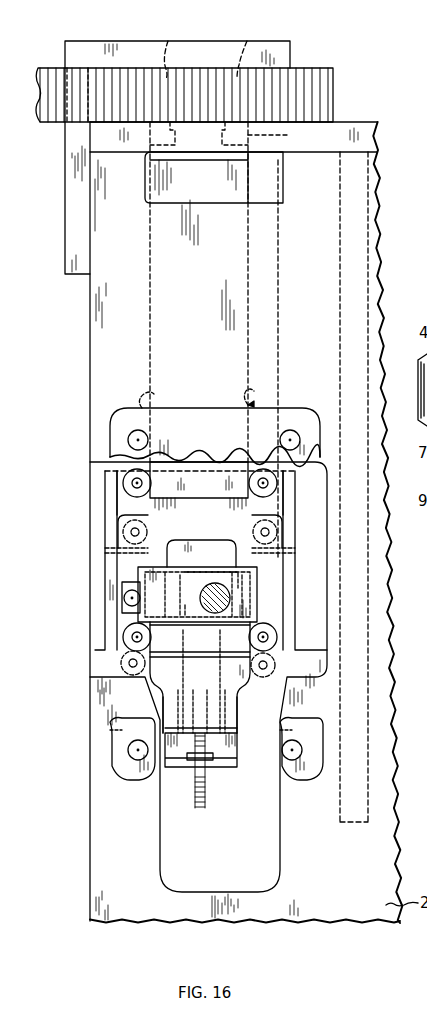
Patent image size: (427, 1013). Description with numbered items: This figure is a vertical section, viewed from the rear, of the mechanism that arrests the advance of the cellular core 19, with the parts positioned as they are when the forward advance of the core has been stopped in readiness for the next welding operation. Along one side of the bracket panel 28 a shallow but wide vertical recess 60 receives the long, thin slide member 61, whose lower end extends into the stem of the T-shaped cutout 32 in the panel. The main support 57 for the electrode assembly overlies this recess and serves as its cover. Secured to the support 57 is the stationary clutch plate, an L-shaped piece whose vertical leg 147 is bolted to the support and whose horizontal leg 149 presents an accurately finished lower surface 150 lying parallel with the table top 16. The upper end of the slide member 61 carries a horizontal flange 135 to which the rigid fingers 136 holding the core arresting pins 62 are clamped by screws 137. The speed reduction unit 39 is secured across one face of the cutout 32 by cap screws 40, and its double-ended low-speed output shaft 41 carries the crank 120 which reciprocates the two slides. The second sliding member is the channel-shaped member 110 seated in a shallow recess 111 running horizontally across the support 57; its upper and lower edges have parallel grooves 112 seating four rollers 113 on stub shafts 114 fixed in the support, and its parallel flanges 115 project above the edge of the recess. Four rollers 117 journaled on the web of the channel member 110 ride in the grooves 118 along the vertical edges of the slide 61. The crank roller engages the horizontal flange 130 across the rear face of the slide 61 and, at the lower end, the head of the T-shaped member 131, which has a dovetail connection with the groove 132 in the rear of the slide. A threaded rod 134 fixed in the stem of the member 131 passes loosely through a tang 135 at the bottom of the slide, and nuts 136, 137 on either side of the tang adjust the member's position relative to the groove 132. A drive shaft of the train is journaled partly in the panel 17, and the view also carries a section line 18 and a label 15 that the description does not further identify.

The core 19 is at (318, 70).
The horizontal leg 149 is at (120, 50).
The core arresting pins 62 is at (206, 49).
The lower surface 150 is at (270, 74).
The table top 16 is at (362, 123).
The vertical leg 147 is at (70, 184).
The vertical recess 60 is at (270, 240).
The nut 136 is at (135, 178).
The slide member 61 is at (258, 186).
The tang 135 is at (194, 158).
The main support 57 is at (379, 238).
The frame member 15 is at (376, 266).
The panel 17 is at (138, 417).
The speed reduction unit 39 is at (290, 432).
The cap screws 40 is at (290, 430).
The parallel grooves 118 is at (242, 406).
The T-shaped cutout 32 is at (97, 466).
The flange 130 is at (202, 503).
The rollers 117 is at (122, 484).
The parallel flanges 115 is at (105, 493).
The rollers 113 is at (118, 530).
The stub shafts 114 is at (110, 540).
The parallel grooves 112 is at (297, 540).
The shallow recess 111 is at (112, 549).
The crank 120 is at (178, 565).
The low-speed output shaft 41 is at (216, 583).
The channel-shaped member 110 is at (100, 603).
The section line 18 is at (410, 625).
The T-shaped member 131 is at (162, 690).
The groove 132 is at (227, 706).
The threaded rod 134 is at (207, 810).
The nut 137 is at (208, 792).
The bracket panel 28 is at (90, 878).